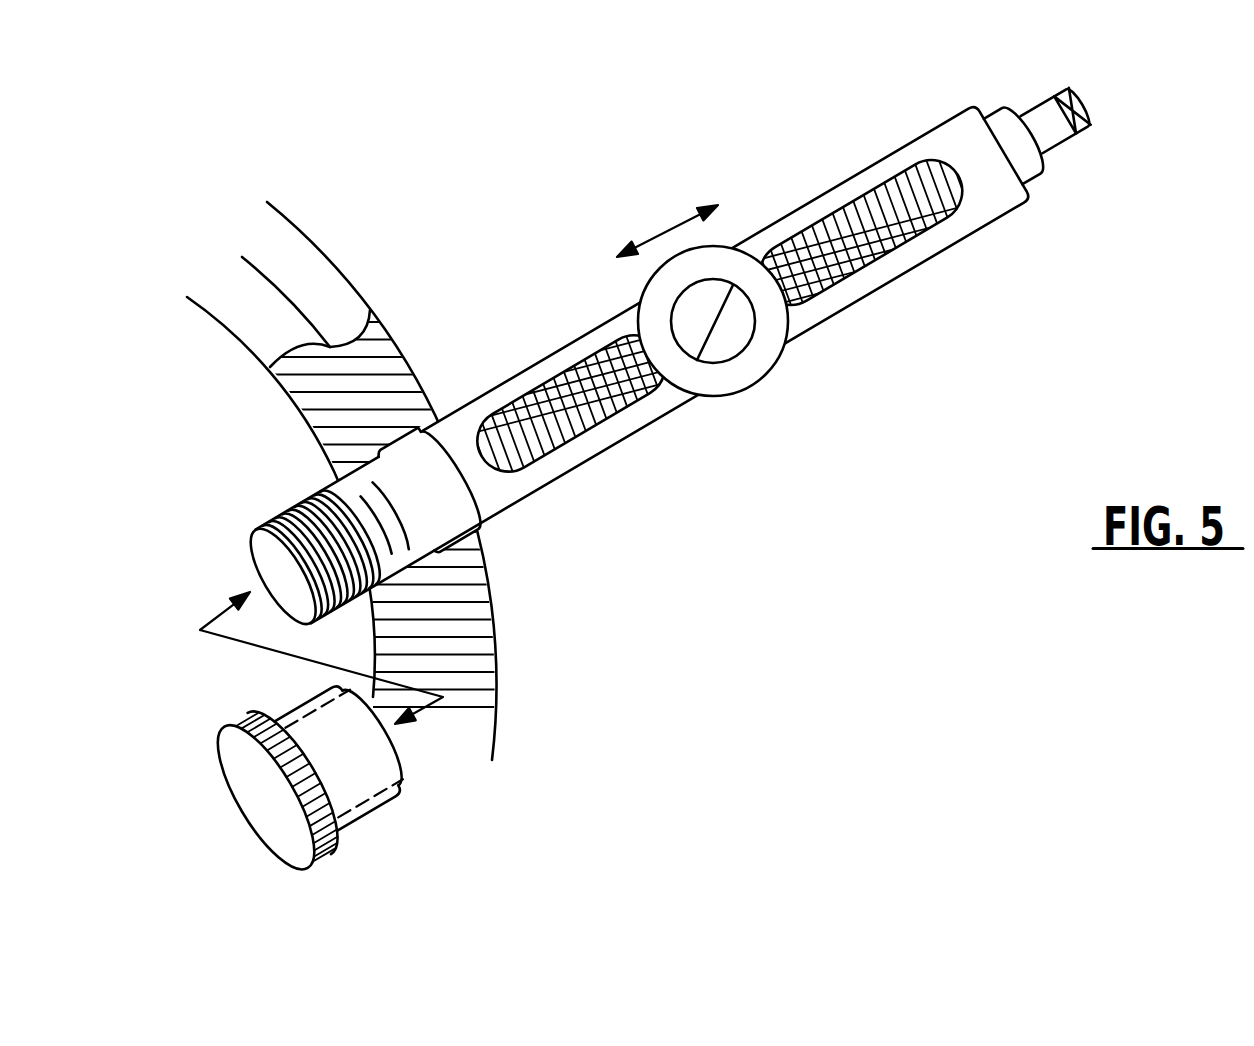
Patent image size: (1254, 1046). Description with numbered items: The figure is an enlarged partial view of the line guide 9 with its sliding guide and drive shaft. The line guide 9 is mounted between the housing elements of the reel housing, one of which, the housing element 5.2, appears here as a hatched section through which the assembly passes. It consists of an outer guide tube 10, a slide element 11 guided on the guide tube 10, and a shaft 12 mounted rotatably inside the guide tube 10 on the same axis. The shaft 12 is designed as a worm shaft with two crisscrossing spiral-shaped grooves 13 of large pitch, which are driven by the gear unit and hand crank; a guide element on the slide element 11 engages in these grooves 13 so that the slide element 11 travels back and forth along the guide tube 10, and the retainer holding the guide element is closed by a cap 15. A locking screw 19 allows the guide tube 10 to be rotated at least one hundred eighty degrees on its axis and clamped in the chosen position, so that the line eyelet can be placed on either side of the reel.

The line guide 9 is at (692, 332).
The guide tube 10 is at (918, 147).
The slide element 11 is at (767, 360).
The shaft 12 is at (1048, 130).
The spiral-shaped grooves 13 is at (892, 227).
The cap 15 is at (718, 348).
The locking screw 19 is at (327, 840).
The housing element 5.2 is at (445, 698).